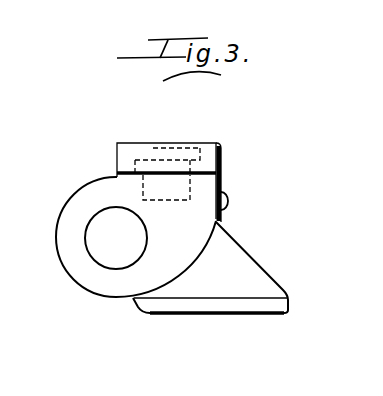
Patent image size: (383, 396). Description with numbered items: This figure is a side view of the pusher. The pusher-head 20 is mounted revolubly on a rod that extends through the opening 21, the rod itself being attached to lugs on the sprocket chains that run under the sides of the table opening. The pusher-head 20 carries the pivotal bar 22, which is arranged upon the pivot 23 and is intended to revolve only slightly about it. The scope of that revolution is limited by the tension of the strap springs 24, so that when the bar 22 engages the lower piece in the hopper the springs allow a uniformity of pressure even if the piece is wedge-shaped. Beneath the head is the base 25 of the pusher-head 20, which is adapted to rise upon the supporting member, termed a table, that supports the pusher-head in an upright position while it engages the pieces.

The pusher-head 20 is at (73, 270).
The opening 21 is at (100, 222).
The pivotal bar 22 is at (139, 147).
The pivot 23 is at (140, 150).
The strap springs 24 is at (222, 156).
The base 25 is at (223, 305).